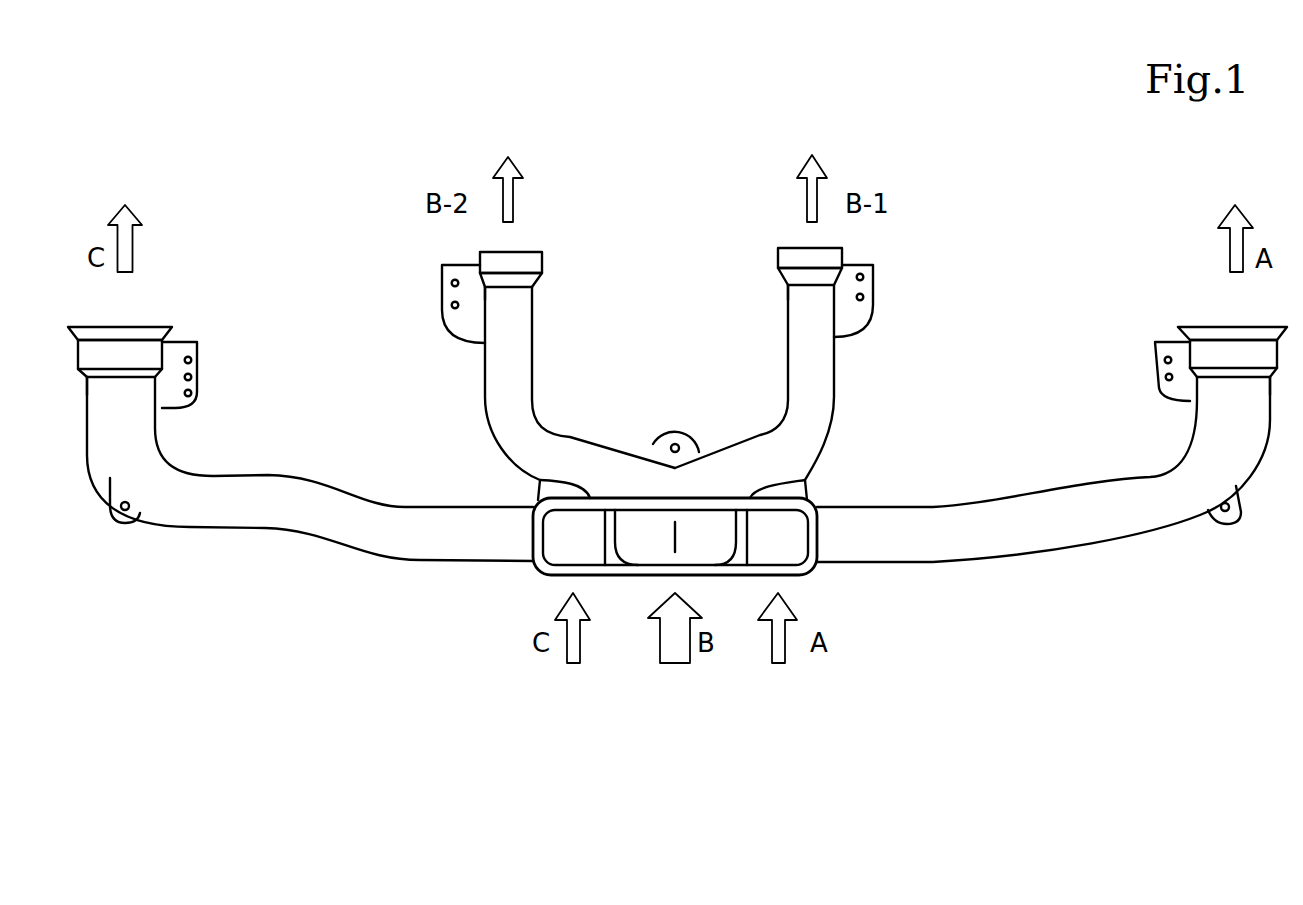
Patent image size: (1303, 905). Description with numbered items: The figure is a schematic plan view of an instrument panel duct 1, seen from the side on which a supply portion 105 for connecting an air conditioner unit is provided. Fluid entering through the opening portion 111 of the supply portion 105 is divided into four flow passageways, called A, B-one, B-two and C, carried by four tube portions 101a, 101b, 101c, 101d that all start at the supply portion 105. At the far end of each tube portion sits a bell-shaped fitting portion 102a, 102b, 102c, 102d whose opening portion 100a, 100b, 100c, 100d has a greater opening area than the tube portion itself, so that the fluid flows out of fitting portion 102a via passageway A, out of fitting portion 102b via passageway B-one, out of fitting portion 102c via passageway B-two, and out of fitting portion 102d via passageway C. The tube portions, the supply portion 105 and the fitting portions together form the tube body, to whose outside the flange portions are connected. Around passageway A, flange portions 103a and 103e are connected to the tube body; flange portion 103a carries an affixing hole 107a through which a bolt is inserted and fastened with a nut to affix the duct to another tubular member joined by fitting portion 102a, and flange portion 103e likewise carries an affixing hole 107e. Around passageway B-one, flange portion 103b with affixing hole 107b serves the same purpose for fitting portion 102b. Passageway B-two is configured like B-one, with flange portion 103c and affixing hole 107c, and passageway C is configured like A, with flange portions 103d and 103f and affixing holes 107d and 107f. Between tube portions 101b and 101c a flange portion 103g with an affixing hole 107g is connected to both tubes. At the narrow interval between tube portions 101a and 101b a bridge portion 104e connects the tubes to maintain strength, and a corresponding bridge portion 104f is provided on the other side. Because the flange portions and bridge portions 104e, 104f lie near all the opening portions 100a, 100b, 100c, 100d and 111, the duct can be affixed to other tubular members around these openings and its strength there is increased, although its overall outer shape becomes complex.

The instrument panel duct 1 is at (1004, 233).
The opening portion 100a is at (1218, 327).
The opening portion 100b is at (795, 248).
The opening portion 100c is at (512, 250).
The opening portion 100d is at (122, 325).
The tube portion 101a is at (1047, 540).
The tube portion 101b is at (805, 350).
The tube portion 101c is at (520, 352).
The tube portion 101d is at (183, 517).
The fitting portion 102a is at (1210, 350).
The fitting portion 102b is at (822, 258).
The fitting portion 102c is at (520, 265).
The fitting portion 102d is at (150, 348).
The flange portion 103a is at (1180, 390).
The flange portion 103b is at (845, 270).
The flange portion 103c is at (460, 267).
The flange portion 103d is at (178, 402).
The flange portion 103e is at (1213, 522).
The flange portion 103f is at (122, 525).
The flange portion 103g is at (675, 437).
The bridge portion 104e is at (800, 482).
The bridge portion 104f is at (542, 485).
The supply portion 105 is at (813, 555).
The affixing hole 107a is at (1165, 377).
The affixing hole 107b is at (864, 277).
The affixing hole 107c is at (451, 284).
The affixing hole 107d is at (192, 393).
The affixing hole 107e is at (1225, 522).
The affixing hole 107f is at (120, 506).
The affixing hole 107g is at (671, 447).
The opening portion 111 is at (713, 552).